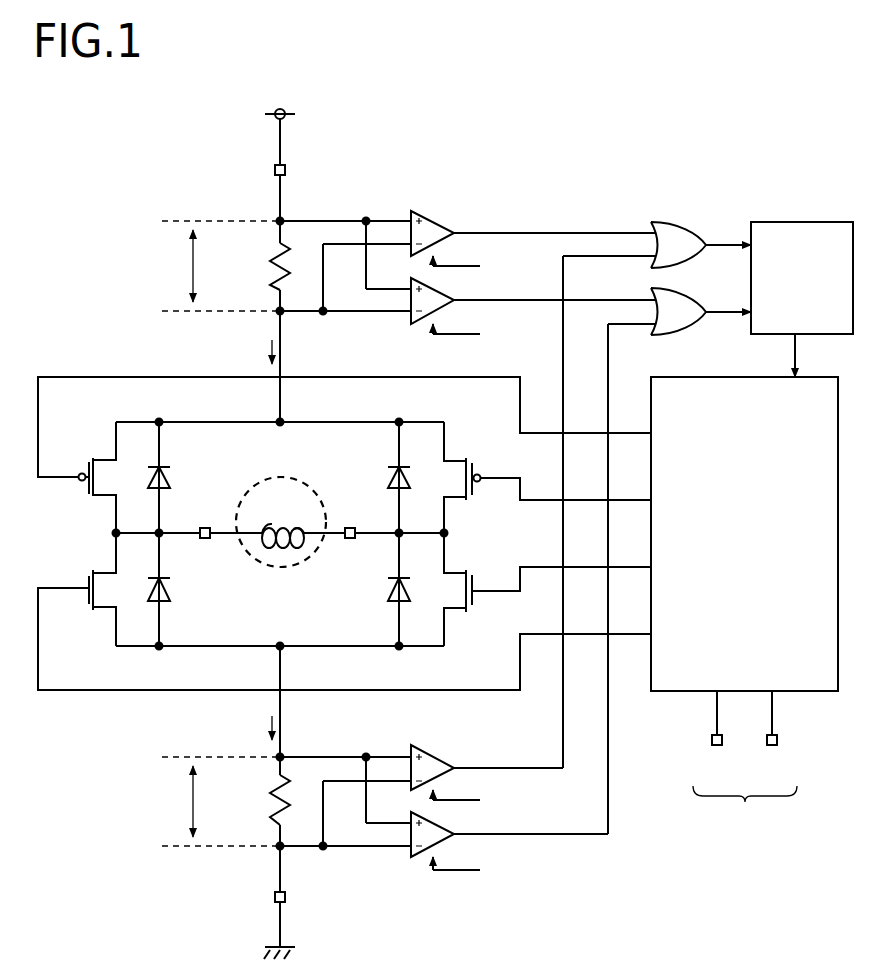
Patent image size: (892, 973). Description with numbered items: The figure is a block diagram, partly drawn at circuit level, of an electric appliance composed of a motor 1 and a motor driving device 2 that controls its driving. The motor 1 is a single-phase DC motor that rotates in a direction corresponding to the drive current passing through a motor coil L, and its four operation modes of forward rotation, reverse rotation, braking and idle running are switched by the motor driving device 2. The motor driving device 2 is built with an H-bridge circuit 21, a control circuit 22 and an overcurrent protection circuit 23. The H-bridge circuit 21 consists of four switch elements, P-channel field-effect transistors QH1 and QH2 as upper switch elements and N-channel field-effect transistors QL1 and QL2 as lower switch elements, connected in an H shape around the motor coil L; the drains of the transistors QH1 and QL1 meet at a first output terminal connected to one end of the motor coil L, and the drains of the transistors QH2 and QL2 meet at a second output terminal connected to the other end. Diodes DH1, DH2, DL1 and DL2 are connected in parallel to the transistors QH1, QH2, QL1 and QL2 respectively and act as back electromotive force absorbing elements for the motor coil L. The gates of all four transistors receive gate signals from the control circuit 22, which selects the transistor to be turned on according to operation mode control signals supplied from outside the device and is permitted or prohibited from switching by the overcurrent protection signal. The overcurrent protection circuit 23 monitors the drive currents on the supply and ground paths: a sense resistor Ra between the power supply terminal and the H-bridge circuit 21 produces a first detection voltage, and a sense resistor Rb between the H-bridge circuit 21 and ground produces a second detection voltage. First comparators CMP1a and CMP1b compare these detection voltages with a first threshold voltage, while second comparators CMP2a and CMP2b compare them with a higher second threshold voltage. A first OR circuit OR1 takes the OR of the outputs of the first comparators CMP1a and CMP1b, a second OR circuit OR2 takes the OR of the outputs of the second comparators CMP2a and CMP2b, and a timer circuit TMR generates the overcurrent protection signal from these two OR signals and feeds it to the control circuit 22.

The motor 1 is at (283, 568).
The motor driving device 2 is at (152, 178).
The H-bridge circuit 21 is at (182, 662).
The control circuit 22 is at (822, 692).
The overcurrent protection circuit 23 is at (563, 200).
The motor coil L is at (282, 523).
The sense resistor Ra is at (268, 272).
The sense resistor Rb is at (270, 806).
The first comparator CMP1a is at (409, 215).
The second comparator CMP2a is at (416, 322).
The first comparator CMP1b is at (414, 751).
The second comparator CMP2b is at (416, 855).
The first OR circuit OR1 is at (698, 223).
The second OR circuit OR2 is at (694, 335).
The timer circuit TMR is at (795, 222).
The P-channel field-effect transistor QH1 is at (89, 463).
The P-channel field-effect transistor QH2 is at (482, 451).
The N-channel field-effect transistor QL1 is at (94, 577).
The N-channel field-effect transistor QL2 is at (482, 567).
The diode DH1 is at (172, 478).
The diode DH2 is at (390, 478).
The diode DL1 is at (172, 590).
The diode DL2 is at (390, 590).